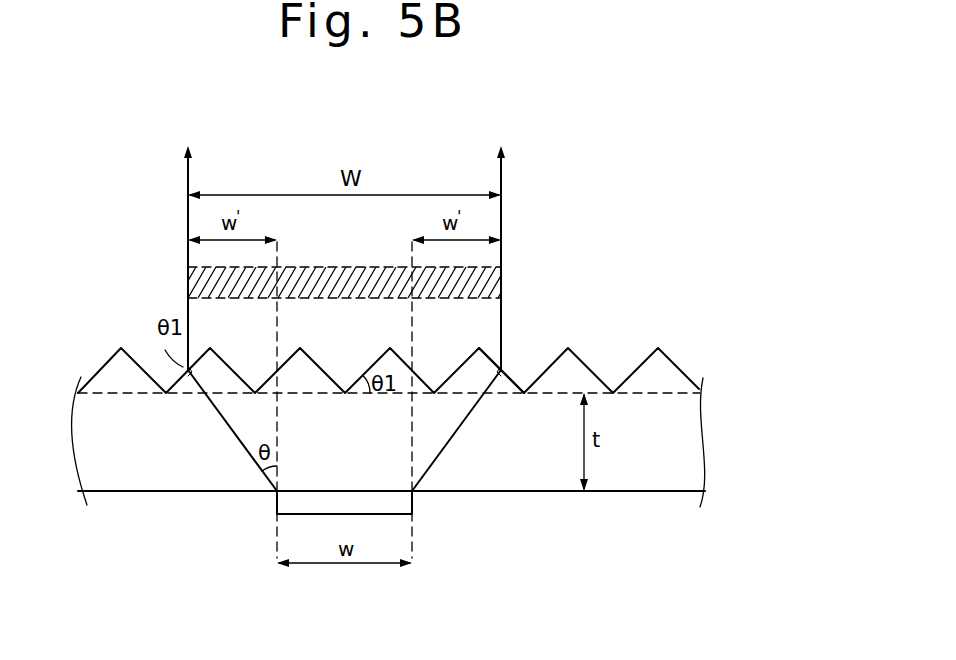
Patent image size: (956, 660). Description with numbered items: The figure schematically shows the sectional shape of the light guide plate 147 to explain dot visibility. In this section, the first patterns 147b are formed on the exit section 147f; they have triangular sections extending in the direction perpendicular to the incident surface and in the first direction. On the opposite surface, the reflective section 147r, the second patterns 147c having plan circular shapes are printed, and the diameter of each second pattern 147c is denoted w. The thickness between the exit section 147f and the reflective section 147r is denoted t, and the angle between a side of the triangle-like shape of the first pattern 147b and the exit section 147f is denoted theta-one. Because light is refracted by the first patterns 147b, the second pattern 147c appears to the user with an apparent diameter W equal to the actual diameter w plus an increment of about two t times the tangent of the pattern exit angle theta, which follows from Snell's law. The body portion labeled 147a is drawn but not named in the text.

The light guide plate 147 is at (125, 293).
The base layer 147a is at (109, 478).
The first pattern 147b is at (113, 363).
The second pattern 147c is at (288, 503).
The exit section 147f is at (513, 382).
The reflective section 147r is at (523, 491).